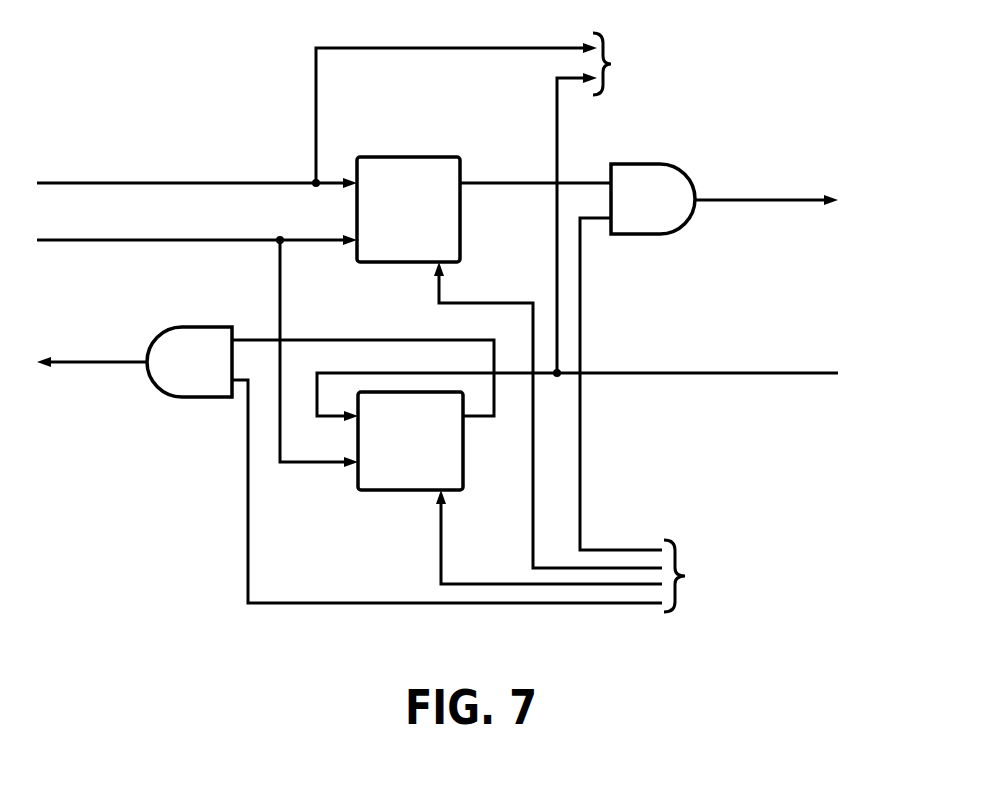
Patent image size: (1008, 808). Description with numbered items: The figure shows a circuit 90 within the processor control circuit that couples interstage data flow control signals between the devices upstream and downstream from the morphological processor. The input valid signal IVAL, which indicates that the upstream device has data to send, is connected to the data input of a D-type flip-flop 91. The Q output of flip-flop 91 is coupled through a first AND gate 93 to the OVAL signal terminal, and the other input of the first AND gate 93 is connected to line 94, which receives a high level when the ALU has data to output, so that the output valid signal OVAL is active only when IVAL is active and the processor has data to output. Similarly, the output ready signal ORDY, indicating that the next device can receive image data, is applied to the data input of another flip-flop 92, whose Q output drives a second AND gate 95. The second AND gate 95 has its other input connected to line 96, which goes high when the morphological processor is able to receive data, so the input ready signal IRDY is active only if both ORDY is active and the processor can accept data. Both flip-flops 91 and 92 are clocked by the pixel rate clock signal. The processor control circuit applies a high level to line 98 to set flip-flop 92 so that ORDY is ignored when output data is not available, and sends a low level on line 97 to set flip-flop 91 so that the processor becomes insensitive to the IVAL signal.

The circuit 90 is at (479, 315).
The D-type flip-flop 91 is at (396, 157).
The flip-flop 92 is at (373, 490).
The first AND gate 93 is at (630, 234).
The line 94 is at (580, 483).
The second AND gate 95 is at (183, 327).
The line 96 is at (410, 603).
The line 97 is at (533, 542).
The line 98 is at (468, 584).